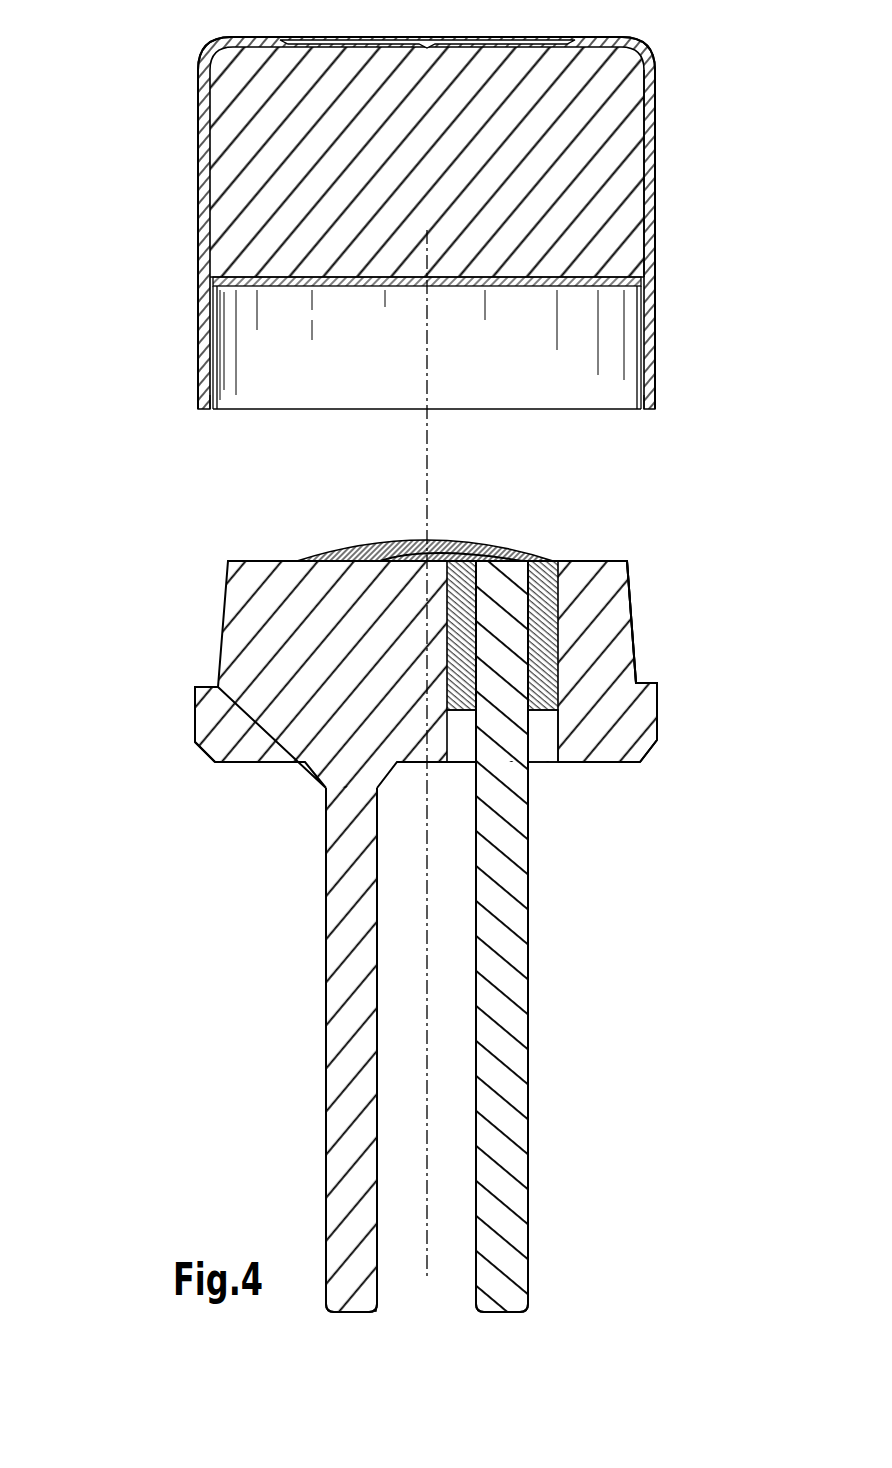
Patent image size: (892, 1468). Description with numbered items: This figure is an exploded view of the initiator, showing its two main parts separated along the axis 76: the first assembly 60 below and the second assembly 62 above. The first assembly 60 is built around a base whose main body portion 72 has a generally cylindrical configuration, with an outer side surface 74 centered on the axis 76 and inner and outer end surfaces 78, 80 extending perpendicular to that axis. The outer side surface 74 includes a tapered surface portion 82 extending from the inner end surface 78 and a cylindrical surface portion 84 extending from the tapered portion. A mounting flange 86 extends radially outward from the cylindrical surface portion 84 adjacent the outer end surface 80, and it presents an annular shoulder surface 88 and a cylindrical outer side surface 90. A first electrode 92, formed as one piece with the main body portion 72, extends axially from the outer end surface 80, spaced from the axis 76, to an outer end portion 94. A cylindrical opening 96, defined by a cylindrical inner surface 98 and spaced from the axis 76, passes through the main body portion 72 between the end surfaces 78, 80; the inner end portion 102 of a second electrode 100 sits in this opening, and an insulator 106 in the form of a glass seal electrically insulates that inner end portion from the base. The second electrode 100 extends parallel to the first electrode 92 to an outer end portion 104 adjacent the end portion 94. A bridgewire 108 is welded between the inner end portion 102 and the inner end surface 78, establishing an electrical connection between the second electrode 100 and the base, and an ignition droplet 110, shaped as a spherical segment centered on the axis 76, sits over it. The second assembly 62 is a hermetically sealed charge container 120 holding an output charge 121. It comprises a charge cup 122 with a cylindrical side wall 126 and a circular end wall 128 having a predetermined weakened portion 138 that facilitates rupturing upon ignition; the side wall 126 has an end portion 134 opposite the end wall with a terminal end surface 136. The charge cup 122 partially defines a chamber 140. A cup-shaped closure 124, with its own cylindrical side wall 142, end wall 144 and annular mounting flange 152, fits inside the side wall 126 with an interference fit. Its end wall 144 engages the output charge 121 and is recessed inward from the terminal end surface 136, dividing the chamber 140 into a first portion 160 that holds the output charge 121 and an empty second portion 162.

The first assembly 60 is at (183, 939).
The second assembly 62 is at (98, 176).
The main body portion 72 is at (282, 628).
The outer side surface 74 is at (632, 620).
The axis 76 is at (427, 1145).
The inner end surface 78 is at (262, 561).
The outer end surface 80 is at (593, 763).
The tapered surface portion 82 is at (630, 583).
The cylindrical surface portion 84 is at (637, 660).
The mounting flange 86 is at (215, 757).
The annular shoulder surface 88 is at (200, 688).
The cylindrical outer side surface 90 is at (195, 725).
The first electrode 92 is at (327, 915).
The outer end portion 94 is at (325, 1158).
The cylindrical opening 96 is at (542, 748).
The cylindrical inner surface 98 is at (566, 722).
The second electrode 100 is at (515, 1000).
The inner end portion 102 is at (503, 668).
The outer end portion 104 is at (528, 1232).
The insulator 106 is at (543, 598).
The bridgewire 108 is at (440, 548).
The ignition droplet 110 is at (340, 548).
The charge container 120 is at (183, 242).
The output charge 121 is at (248, 190).
The charge cup 122 is at (196, 97).
The closure 124 is at (291, 412).
The cylindrical side wall 126 is at (198, 140).
The end wall 128 is at (593, 40).
The end portion 134 is at (657, 372).
The terminal end surface 136 is at (200, 410).
The weakened portion 138 is at (362, 42).
The chamber 140 is at (612, 172).
The cylindrical side wall 142 is at (220, 335).
The end wall 144 is at (352, 288).
The annular mounting flange 152 is at (652, 407).
The first portion 160 is at (620, 205).
The second portion 162 is at (600, 322).